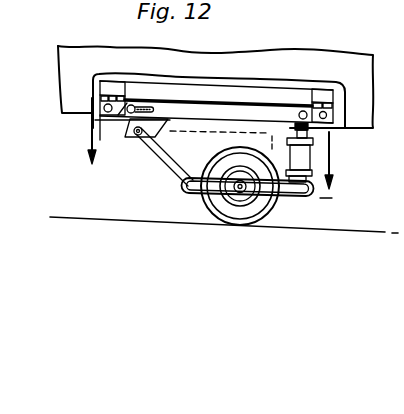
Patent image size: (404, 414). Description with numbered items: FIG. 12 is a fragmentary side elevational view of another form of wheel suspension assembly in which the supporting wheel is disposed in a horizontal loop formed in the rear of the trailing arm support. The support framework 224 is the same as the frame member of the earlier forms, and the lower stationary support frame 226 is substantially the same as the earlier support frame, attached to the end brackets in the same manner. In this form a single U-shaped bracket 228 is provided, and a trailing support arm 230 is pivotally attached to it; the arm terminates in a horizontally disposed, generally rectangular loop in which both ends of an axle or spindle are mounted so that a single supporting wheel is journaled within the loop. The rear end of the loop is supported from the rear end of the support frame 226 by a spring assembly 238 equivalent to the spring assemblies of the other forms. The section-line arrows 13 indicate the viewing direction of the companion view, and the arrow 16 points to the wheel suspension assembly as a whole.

The section line 13-13 view direction arrows 13 is at (211, 157).
The wheel assembly 16 is at (151, 166).
The carriage frame 224 is at (292, 95).
The guide rail 226 is at (227, 112).
The pivot bracket 228 is at (135, 133).
The link arm 230 is at (167, 172).
The hydraulic cylinder 238 is at (295, 153).